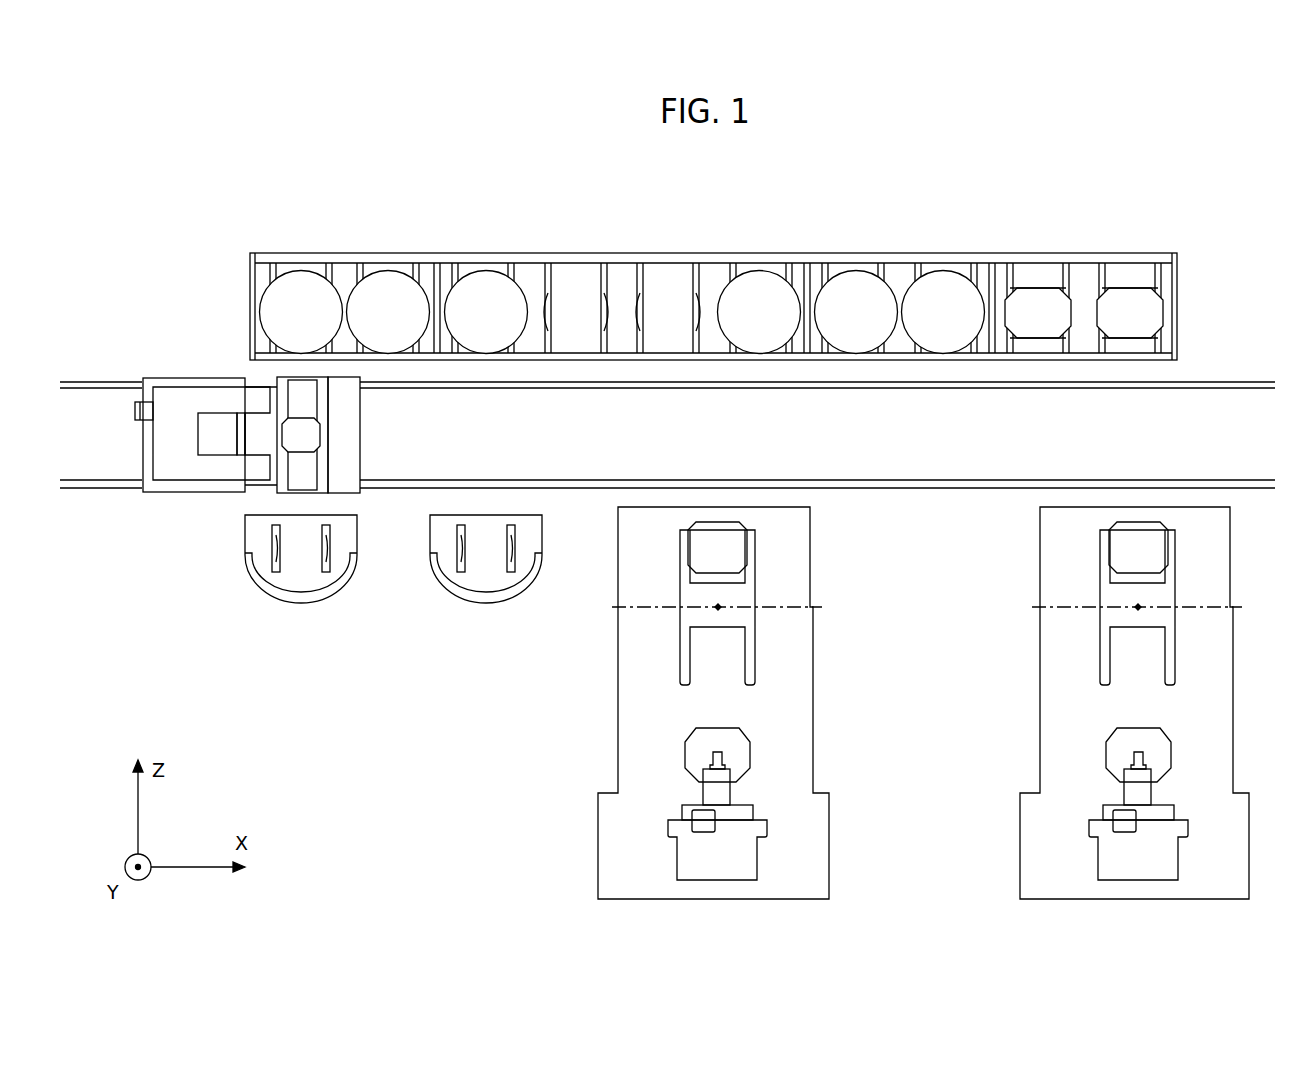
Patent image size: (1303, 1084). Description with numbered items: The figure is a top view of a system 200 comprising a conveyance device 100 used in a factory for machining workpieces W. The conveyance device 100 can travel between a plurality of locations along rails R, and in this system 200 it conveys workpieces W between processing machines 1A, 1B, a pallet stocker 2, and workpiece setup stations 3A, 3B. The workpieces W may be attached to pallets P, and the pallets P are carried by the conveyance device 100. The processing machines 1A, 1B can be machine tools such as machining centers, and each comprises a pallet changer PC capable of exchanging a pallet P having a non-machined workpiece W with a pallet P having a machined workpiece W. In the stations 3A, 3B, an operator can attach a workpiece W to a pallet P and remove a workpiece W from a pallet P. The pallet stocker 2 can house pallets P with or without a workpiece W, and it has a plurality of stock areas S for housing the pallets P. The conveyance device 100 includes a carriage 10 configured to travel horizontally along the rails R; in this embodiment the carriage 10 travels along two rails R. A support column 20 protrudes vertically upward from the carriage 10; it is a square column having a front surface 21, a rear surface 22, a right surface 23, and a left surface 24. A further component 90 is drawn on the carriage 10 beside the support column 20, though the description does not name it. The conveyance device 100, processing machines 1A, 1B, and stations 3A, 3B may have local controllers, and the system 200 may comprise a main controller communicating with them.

The system 200 is at (123, 226).
The conveyance device 100 is at (178, 358).
The pallet stocker 2 is at (1160, 232).
The carriage 10 is at (183, 488).
The support column 20 is at (213, 433).
The front surface 21 is at (240, 433).
The rear surface 22 is at (198, 442).
The right surface 23 is at (213, 413).
The left surface 24 is at (223, 456).
The drive unit 90 is at (343, 405).
The workpiece setup station 3A is at (306, 614).
The workpiece setup station 3B is at (491, 614).
The processing machine 1A is at (828, 703).
The processing machine 1B is at (1003, 822).
The workpiece W is at (483, 297).
The pallet P is at (1128, 305).
The pallet changer PC is at (1072, 582).
The rail R is at (705, 480).
The stock area S is at (1088, 436).